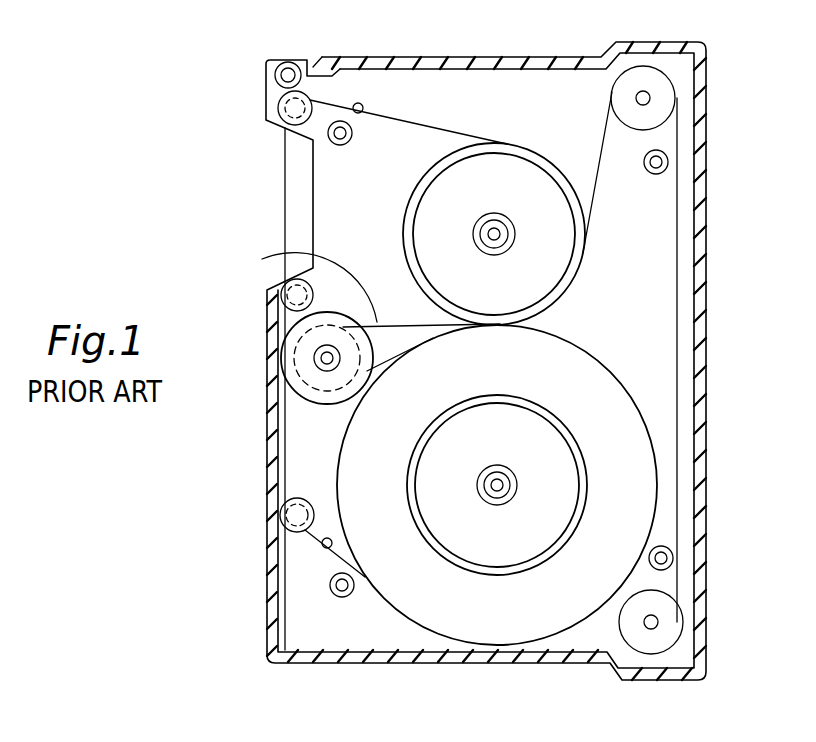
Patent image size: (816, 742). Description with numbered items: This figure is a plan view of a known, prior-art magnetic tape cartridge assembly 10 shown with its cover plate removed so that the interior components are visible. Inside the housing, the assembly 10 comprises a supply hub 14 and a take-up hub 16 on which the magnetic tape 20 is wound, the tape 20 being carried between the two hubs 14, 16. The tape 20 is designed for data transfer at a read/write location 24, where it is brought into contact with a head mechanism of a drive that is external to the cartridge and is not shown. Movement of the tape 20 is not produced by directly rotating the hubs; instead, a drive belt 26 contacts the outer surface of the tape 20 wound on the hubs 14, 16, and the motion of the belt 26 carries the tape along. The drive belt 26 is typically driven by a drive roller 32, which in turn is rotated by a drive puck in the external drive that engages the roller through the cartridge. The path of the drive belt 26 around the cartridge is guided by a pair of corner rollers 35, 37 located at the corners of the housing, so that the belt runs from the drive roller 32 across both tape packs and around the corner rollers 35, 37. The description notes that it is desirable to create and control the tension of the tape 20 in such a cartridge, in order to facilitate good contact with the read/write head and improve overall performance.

The magnetic tape cartridge assembly 10 is at (268, 497).
The supply hub 14 is at (515, 498).
The take-up hub 16 is at (513, 238).
The magnetic tape 20 is at (418, 125).
The read/write location 24 is at (268, 192).
The drive belt 26 is at (318, 261).
The drive roller 32 is at (293, 368).
The corner roller 35 is at (650, 100).
The corner roller 37 is at (658, 622).